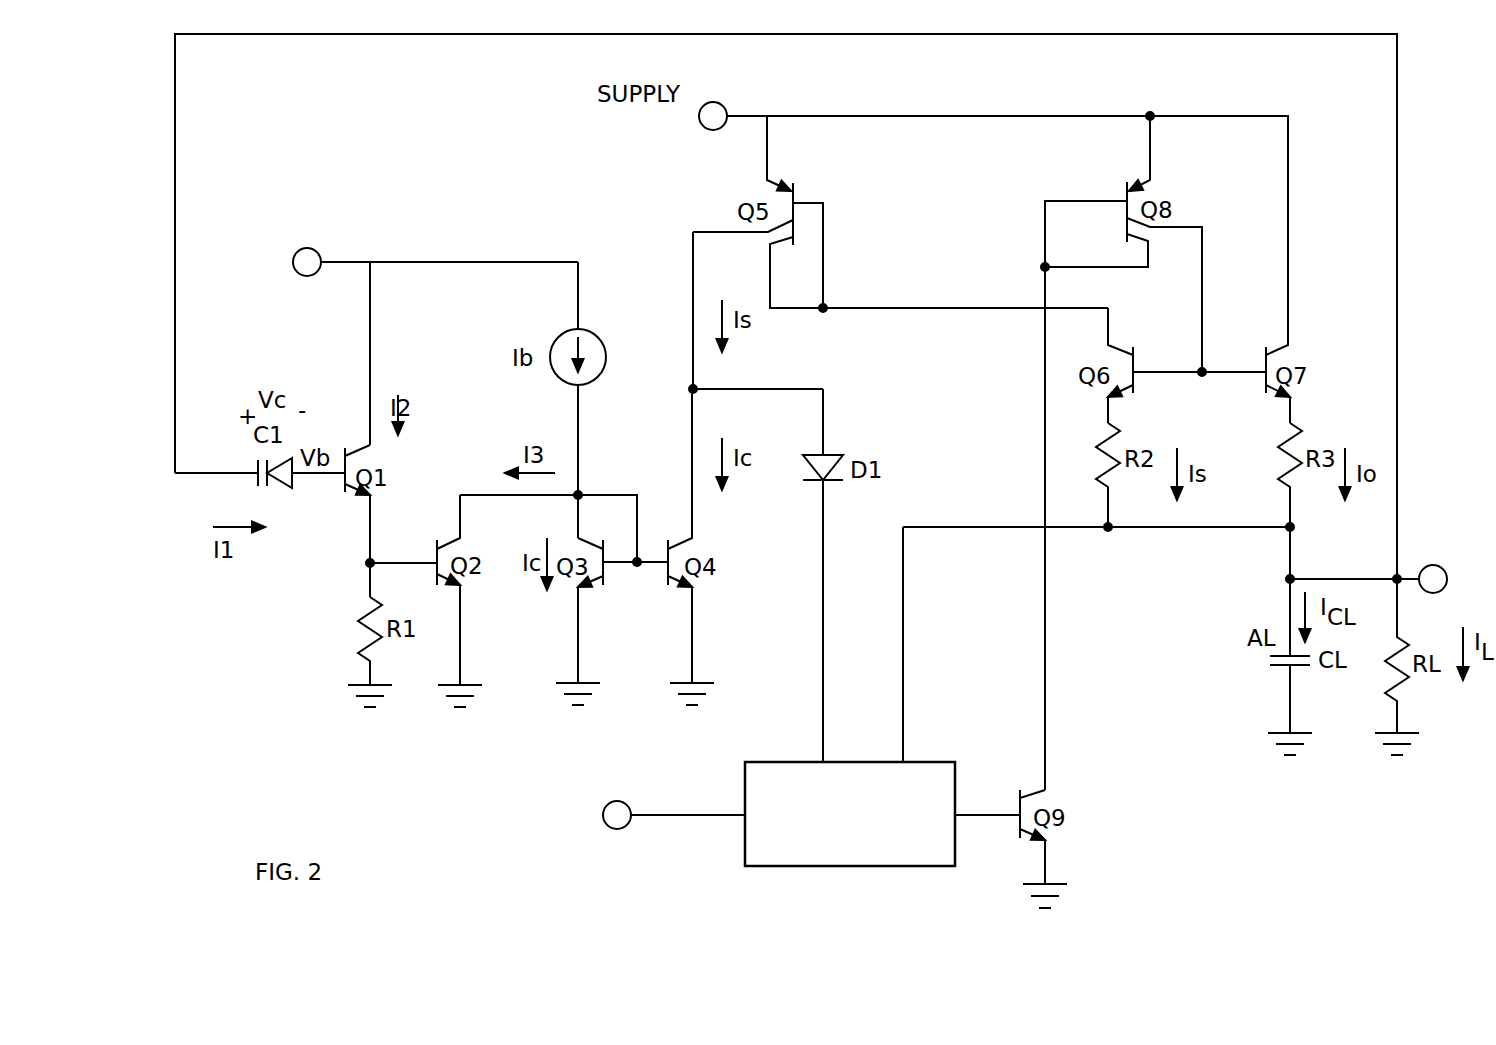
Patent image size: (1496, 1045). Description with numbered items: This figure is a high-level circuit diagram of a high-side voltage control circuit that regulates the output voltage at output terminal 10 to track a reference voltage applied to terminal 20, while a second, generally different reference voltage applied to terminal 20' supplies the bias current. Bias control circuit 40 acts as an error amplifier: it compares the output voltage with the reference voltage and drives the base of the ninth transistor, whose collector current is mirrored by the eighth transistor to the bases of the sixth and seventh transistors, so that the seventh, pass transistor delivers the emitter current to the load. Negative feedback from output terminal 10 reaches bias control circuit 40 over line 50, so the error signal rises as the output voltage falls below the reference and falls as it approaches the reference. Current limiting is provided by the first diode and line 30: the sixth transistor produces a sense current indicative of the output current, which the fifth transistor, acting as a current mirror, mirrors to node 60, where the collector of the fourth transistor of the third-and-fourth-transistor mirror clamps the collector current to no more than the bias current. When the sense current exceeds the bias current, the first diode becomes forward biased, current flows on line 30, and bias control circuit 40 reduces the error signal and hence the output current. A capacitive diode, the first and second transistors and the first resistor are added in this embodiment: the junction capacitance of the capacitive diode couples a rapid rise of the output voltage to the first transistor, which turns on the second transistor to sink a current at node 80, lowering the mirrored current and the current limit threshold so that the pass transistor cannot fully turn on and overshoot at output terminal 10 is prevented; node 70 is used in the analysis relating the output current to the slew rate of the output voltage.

The output terminal 10 is at (1427, 566).
The reference voltage terminal 20 is at (589, 791).
The second reference voltage terminal 20' is at (283, 238).
The line 30 is at (822, 643).
The bias control circuit 40 is at (860, 870).
The line 50 is at (904, 712).
The node 60 is at (690, 388).
The node 70 is at (1286, 580).
The node 80 is at (583, 492).